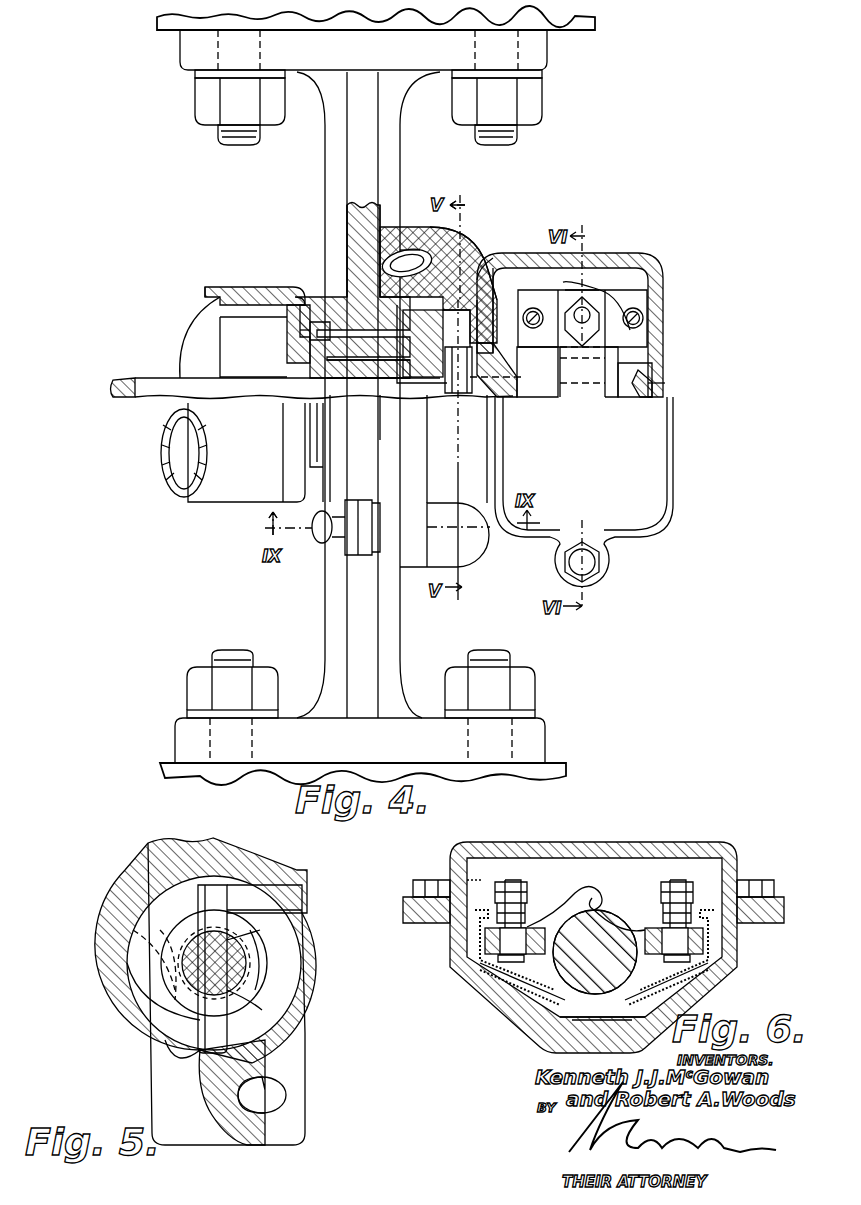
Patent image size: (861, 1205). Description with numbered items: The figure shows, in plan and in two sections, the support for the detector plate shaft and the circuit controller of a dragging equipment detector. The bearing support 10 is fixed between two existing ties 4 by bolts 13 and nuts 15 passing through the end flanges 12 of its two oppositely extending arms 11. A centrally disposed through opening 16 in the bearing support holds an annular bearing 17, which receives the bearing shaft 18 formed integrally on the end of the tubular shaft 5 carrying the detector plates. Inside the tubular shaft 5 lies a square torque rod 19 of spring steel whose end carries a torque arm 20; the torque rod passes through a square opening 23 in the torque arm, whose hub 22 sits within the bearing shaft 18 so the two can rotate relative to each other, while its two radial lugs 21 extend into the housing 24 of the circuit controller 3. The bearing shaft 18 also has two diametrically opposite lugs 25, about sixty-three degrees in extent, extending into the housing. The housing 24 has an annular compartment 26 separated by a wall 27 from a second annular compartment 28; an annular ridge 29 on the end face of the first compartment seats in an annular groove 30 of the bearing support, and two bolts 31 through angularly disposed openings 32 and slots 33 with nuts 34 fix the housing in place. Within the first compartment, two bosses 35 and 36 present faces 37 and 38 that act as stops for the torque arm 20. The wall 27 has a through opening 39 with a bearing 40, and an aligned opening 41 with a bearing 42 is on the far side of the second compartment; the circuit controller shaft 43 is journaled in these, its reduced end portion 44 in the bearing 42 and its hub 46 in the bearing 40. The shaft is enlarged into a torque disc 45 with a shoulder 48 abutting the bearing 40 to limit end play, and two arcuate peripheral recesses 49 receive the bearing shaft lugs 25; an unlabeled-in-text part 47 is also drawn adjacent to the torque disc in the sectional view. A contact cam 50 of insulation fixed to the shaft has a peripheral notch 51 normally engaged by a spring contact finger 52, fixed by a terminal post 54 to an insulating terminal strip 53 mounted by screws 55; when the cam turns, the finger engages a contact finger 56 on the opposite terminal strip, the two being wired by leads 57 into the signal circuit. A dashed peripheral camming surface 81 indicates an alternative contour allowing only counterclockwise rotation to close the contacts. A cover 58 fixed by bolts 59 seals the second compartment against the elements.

In FIG. 4, the circuit controller 3 is at (658, 252).
In FIG. 6, the circuit controller 3 is at (593, 947).
In FIG. 4, the ties 4 is at (175, 32).
In FIG. 4, the tubular shaft 5 is at (207, 295).
In FIG. 4, the bearing support 10 is at (261, 246).
In FIG. 4, the arms 11 is at (325, 156).
In FIG. 4, the end flanges 12 is at (540, 62).
In FIG. 4, the bolts 13 is at (218, 133).
In FIG. 4, the nuts 15 is at (195, 98).
In FIG. 4, the through opening 16 is at (322, 322).
In FIG. 4, the annular bearing 17 is at (355, 378).
In FIG. 4, the bearing shaft 18 is at (300, 358).
In FIG. 4, the torque rod 19 is at (152, 385).
In FIG. 5, the torque rod 19 is at (130, 1020).
In FIG. 4, the torque arm 20 is at (478, 265).
In FIG. 5, the torque arm 20 is at (200, 890).
In FIG. 4, the lugs 21 is at (362, 380).
In FIG. 5, the lugs 21 is at (200, 903).
In FIG. 4, the hub 22 is at (336, 372).
In FIG. 4, the square opening 23 is at (325, 392).
In FIG. 5, the square opening 23 is at (135, 935).
In FIG. 4, the housing 24 is at (600, 268).
In FIG. 5, the housing 24 is at (235, 860).
In FIG. 6, the housing 24 is at (458, 960).
In FIG. 4, the lugs 25 is at (472, 395).
In FIG. 5, the lugs 25 is at (170, 980).
In FIG. 4, the annular compartment 26 is at (510, 310).
In FIG. 4, the wall 27 is at (505, 290).
In FIG. 4, the annular compartment 28 is at (630, 275).
In FIG. 6, the annular compartment 28 is at (481, 873).
In FIG. 4, the annular ridge 29 is at (395, 225).
In FIG. 4, the annular groove 30 is at (357, 268).
In FIG. 4, the bolts 31 is at (420, 258).
In FIG. 4, the openings 32 is at (412, 255).
In FIG. 4, the slots 33 is at (465, 255).
In FIG. 4, the nuts 34 is at (355, 548).
In FIG. 4, the boss 35 is at (480, 270).
In FIG. 5, the boss 35 is at (280, 905).
In FIG. 5, the boss 36 is at (160, 1050).
In FIG. 5, the face 37 is at (300, 873).
In FIG. 5, the face 38 is at (200, 1066).
In FIG. 4, the through opening 39 is at (548, 380).
In FIG. 4, the bearing 40 is at (540, 395).
In FIG. 4, the aligned opening 41 is at (645, 377).
In FIG. 4, the bearing 42 is at (655, 372).
In FIG. 4, the circuit controller shaft 43 is at (640, 340).
In FIG. 6, the circuit controller shaft 43 is at (592, 990).
In FIG. 4, the reduced end portion 44 is at (652, 392).
In FIG. 4, the torque disc 45 is at (388, 378).
In FIG. 4, the hub 46 is at (505, 395).
In FIG. 5, the hub 46 is at (260, 932).
In FIG. 4, the channel 47 is at (420, 385).
In FIG. 5, the channel 47 is at (262, 1005).
In FIG. 4, the shoulder 48 is at (458, 420).
In FIG. 4, the peripheral recesses 49 is at (453, 395).
In FIG. 5, the peripheral recesses 49 is at (185, 950).
In FIG. 6, the contact cam 50 is at (628, 968).
In FIG. 6, the peripheral notch 51 is at (598, 900).
In FIG. 6, the spring contact finger 52 is at (605, 918).
In FIG. 6, the insulating terminal strip 53 is at (545, 955).
In FIG. 6, the terminal post 54 is at (695, 882).
In FIG. 4, the screws 55 is at (645, 312).
In FIG. 4, the contact finger 56 is at (595, 397).
In FIG. 6, the leads 57 is at (520, 998).
In FIG. 4, the cover 58 is at (600, 466).
In FIG. 4, the bolts 59 is at (598, 570).
In FIG. 6, the peripheral camming surface 81 is at (560, 1020).